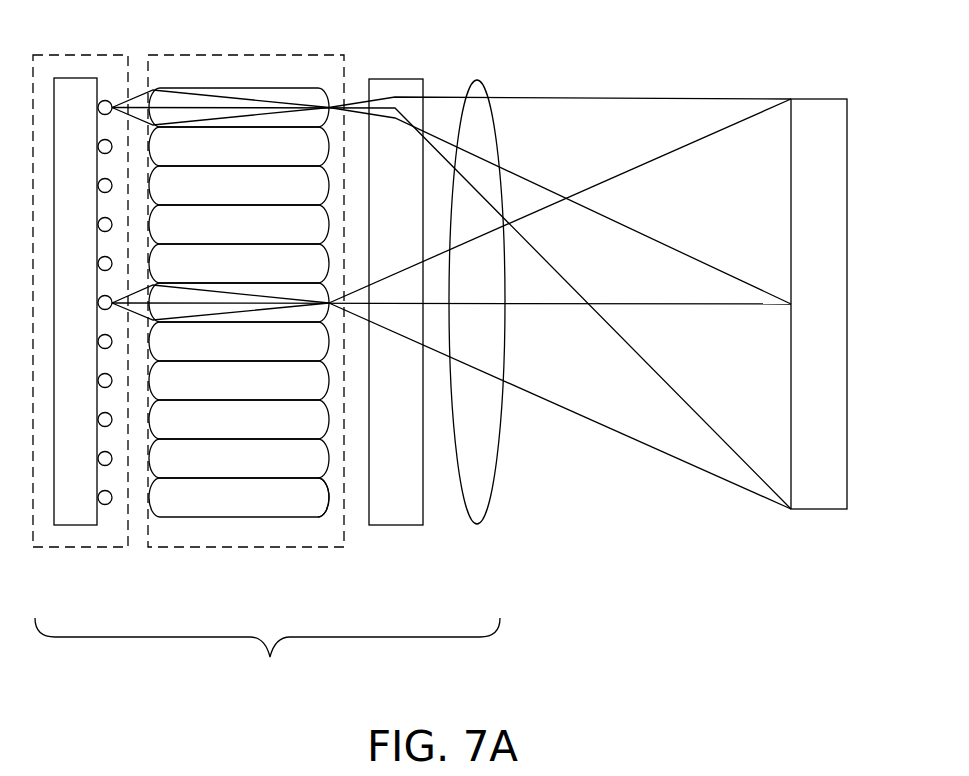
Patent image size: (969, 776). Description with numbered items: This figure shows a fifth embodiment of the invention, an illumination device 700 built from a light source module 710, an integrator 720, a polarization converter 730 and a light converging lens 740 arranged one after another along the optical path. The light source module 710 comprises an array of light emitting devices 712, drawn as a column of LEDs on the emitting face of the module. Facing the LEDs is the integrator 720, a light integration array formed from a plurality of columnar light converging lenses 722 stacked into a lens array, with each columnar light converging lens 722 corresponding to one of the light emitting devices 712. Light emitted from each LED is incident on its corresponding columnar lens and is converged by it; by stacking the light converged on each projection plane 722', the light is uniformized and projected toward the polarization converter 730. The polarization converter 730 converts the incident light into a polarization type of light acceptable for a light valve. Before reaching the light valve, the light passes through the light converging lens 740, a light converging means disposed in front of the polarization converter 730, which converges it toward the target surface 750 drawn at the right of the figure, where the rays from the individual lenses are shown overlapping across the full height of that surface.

The illumination device 700 is at (267, 662).
The light source module 710 is at (65, 53).
The light emitting devices 712 is at (110, 502).
The integrator 720 is at (238, 53).
The columnar light converging lens 722 is at (239, 546).
The projection plane 722' is at (350, 545).
The polarization converter 730 is at (396, 79).
The light converging lens 740 is at (478, 80).
The screen 750 is at (817, 99).